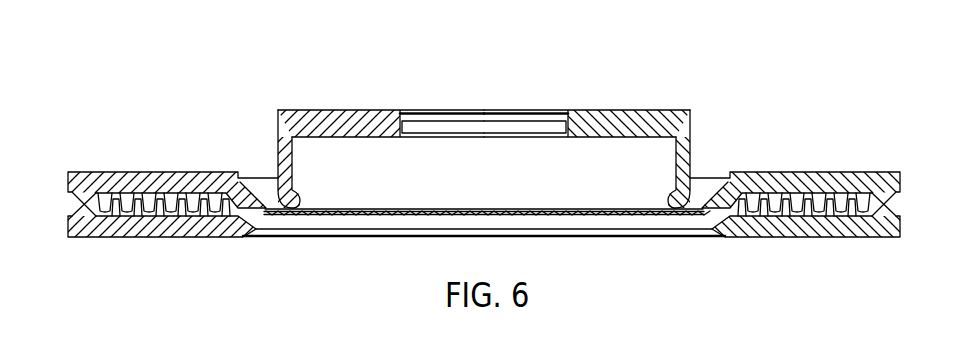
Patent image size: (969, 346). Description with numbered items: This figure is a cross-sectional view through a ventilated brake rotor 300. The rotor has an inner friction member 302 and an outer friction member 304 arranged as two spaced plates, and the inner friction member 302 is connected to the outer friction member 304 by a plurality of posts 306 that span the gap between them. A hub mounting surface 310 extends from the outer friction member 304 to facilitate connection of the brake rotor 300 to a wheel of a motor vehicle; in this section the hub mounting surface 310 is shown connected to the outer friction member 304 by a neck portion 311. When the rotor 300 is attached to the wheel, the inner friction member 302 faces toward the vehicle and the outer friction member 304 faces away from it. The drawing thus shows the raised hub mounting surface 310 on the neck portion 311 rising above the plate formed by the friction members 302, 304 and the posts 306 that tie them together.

The brake rotor 300 is at (484, 154).
The inner friction member 302 is at (817, 236).
The outer friction member 304 is at (817, 176).
The posts 306 is at (797, 214).
The hub mounting surface 310 is at (523, 141).
The neck portion 311 is at (691, 153).